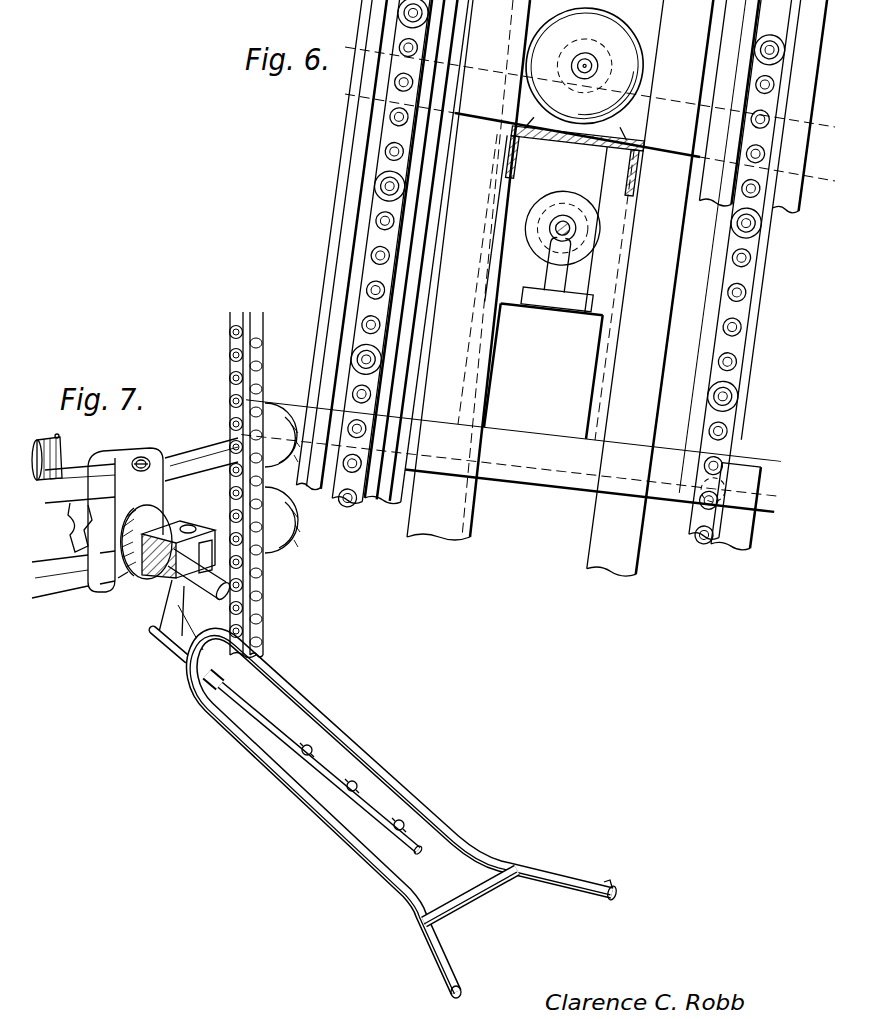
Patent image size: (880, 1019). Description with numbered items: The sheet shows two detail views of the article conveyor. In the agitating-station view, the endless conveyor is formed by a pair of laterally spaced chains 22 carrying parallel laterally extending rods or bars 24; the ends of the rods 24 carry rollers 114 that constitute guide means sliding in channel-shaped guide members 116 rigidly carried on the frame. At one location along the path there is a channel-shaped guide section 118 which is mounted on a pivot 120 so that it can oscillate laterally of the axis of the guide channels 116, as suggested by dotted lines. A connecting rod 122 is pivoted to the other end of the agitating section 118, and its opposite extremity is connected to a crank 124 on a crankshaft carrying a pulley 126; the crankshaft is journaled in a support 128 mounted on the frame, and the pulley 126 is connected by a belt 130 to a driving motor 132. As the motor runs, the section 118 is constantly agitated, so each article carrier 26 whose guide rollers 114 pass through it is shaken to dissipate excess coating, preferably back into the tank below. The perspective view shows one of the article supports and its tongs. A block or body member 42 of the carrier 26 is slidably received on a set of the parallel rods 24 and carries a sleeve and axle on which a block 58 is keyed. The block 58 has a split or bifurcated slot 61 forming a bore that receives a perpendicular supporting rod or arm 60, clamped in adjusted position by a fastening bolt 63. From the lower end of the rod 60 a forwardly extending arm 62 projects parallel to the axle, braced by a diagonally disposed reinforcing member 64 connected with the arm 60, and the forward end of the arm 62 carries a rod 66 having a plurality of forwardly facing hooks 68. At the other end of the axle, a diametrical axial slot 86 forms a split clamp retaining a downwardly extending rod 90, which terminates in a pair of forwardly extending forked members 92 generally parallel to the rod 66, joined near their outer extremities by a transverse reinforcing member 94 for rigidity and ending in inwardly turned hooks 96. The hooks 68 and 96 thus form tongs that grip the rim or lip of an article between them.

In FIG. 6, the chains 22 is at (380, 236).
In FIG. 7, the chains 22 is at (263, 348).
In FIG. 7, the rods or bars 24 is at (190, 457).
In FIG. 7, the article carrier 26 is at (101, 627).
In FIG. 7, the block or body member 42 is at (147, 492).
In FIG. 7, the block 58 is at (134, 586).
In FIG. 7, the supporting rod or arm 60 is at (175, 594).
In FIG. 7, the split or bifurcated slot 61 is at (192, 526).
In FIG. 7, the forwardly extending arm 62 is at (204, 677).
In FIG. 7, the fastening bolt 63 is at (214, 542).
In FIG. 7, the reinforcing member 64 is at (161, 645).
In FIG. 7, the rod 66 is at (303, 807).
In FIG. 7, the forwardly facing hooks 68 is at (401, 819).
In FIG. 7, the diametrical axial slot 86 is at (240, 596).
In FIG. 7, the downwardly extending rod 90 is at (183, 658).
In FIG. 7, the forked members 92 is at (273, 683).
In FIG. 7, the transverse reinforcing member 94 is at (477, 900).
In FIG. 7, the inwardly turned hooks 96 is at (618, 887).
In FIG. 7, the rollers 114 is at (280, 410).
In FIG. 6, the channel-shaped guide members 116 is at (380, 154).
In FIG. 6, the channel-shaped guide section 118 is at (750, 312).
In FIG. 6, the pivot 120 is at (725, 481).
In FIG. 6, the connecting rod 122 is at (618, 237).
In FIG. 6, the crank 124 is at (561, 213).
In FIG. 6, the pulley 126 is at (547, 241).
In FIG. 6, the support 128 is at (545, 297).
In FIG. 6, the belt 130 is at (540, 164).
In FIG. 6, the driving motor 132 is at (583, 71).